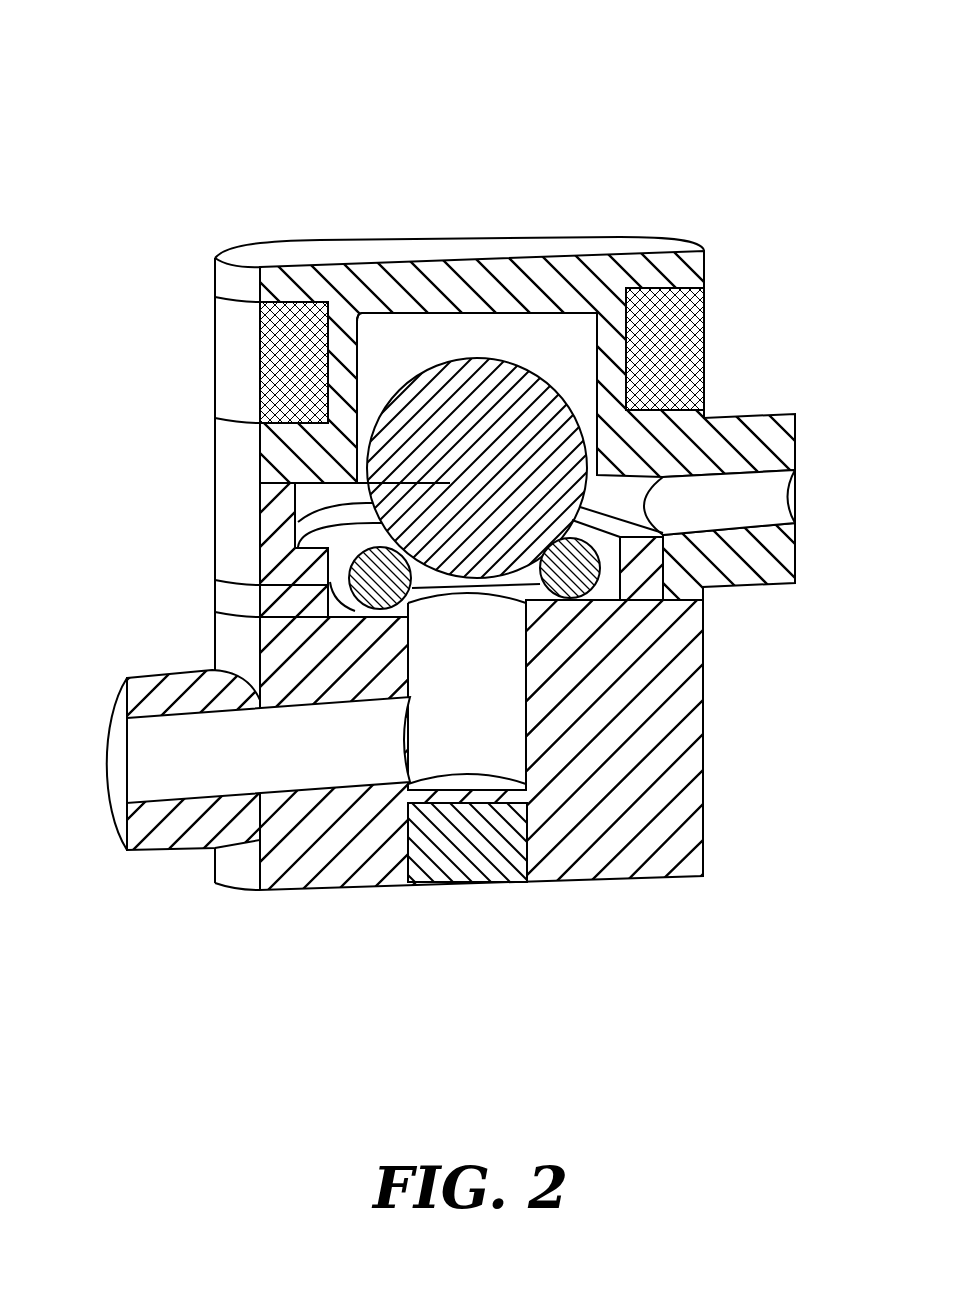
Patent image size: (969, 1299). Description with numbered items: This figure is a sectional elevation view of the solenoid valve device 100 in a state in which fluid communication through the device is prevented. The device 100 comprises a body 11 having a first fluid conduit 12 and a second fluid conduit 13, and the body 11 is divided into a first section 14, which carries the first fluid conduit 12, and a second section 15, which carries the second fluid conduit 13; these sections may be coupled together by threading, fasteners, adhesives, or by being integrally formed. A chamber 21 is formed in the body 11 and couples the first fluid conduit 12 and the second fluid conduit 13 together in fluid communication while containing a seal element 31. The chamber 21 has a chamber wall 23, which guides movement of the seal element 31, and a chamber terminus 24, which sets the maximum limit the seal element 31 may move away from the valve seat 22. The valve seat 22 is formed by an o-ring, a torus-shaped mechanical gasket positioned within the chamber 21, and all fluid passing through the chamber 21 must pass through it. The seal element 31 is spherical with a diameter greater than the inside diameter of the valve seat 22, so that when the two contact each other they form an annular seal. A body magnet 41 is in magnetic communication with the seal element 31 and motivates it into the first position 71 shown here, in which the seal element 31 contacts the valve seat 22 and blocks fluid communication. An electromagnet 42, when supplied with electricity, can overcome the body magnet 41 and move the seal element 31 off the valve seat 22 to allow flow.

The solenoid valve device 100 is at (121, 62).
The body 11 is at (215, 258).
The first fluid conduit 12 is at (183, 757).
The second fluid conduit 13 is at (735, 508).
The first section 14 is at (633, 818).
The second section 15 is at (600, 285).
The chamber 21 is at (404, 342).
The valve seat 22 is at (327, 548).
The chamber wall 23 is at (580, 365).
The chamber terminus 24 is at (477, 312).
The seal element 31 is at (260, 483).
The body magnet 41 is at (480, 837).
The electromagnet 42 is at (667, 323).
The first position 71 is at (466, 601).